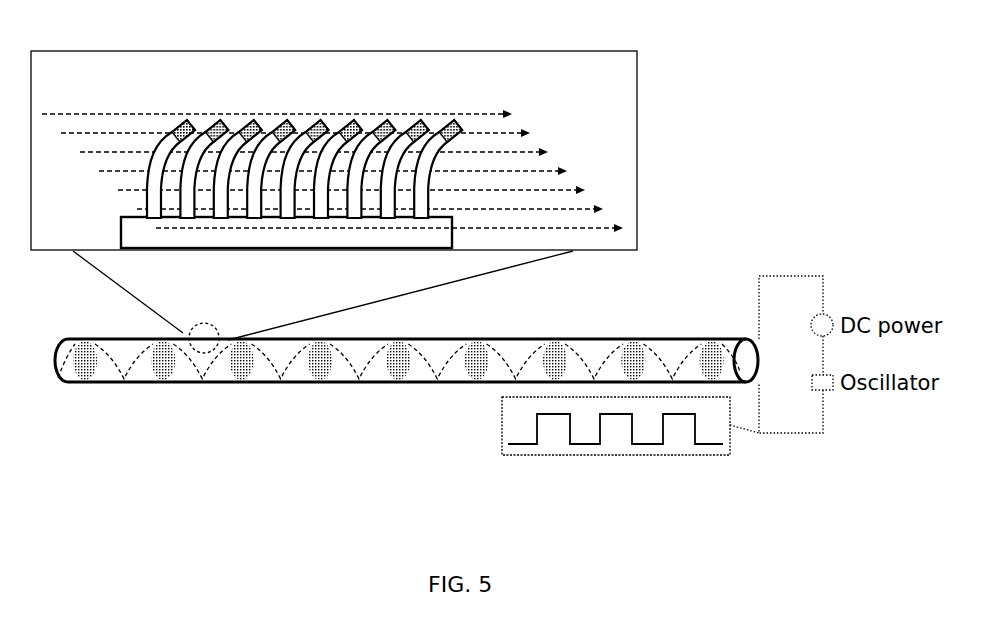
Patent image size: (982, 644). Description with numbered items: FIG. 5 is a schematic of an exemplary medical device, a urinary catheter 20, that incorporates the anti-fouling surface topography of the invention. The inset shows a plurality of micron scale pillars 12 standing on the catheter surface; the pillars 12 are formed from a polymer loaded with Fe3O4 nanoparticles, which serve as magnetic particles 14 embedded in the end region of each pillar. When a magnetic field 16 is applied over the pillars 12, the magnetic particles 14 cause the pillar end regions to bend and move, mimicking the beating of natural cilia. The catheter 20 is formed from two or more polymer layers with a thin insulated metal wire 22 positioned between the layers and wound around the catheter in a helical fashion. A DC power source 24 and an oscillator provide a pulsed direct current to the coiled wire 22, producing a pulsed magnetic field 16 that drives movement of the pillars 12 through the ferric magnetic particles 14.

The pillars 12 is at (146, 203).
The magnetic particles 14 is at (449, 136).
The magnetic field 16 is at (84, 116).
The urinary catheter 20 is at (55, 378).
The metal wire 22 is at (337, 384).
The DC power source 24 is at (622, 456).